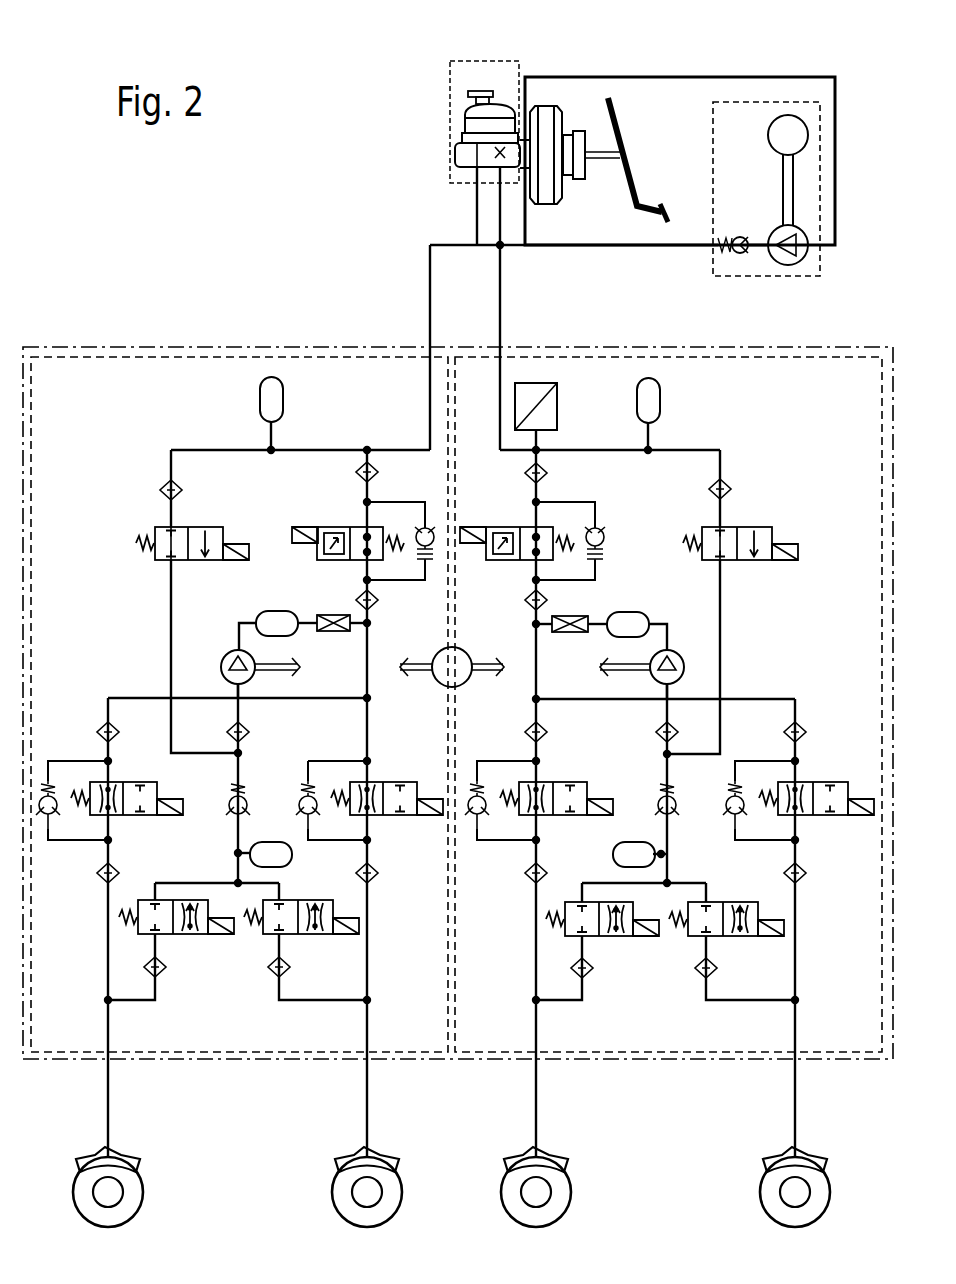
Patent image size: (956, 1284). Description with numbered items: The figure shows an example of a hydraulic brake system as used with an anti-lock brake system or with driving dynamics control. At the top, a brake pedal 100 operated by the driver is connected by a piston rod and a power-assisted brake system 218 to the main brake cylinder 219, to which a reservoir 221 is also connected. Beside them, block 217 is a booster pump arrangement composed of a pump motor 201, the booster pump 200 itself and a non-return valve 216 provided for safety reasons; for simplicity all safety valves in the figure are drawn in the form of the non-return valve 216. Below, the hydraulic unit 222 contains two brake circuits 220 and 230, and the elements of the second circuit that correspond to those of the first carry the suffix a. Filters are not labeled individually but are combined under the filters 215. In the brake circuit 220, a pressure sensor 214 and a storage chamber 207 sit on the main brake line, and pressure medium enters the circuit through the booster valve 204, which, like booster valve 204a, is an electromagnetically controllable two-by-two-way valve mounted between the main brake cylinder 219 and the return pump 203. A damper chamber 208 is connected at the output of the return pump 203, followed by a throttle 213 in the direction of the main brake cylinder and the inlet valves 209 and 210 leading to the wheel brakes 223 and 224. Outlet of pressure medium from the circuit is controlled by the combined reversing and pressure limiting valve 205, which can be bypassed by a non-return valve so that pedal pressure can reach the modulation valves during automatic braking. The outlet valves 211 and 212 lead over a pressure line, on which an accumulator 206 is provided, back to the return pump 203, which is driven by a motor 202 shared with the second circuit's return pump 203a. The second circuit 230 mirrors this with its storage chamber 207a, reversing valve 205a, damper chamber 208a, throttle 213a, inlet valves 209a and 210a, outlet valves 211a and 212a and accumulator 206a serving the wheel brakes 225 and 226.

The brake pedal 100 is at (622, 180).
The booster pump 200 is at (790, 265).
The pump motor 201 is at (788, 117).
The motor 202 is at (462, 680).
The return pump 203 is at (676, 655).
The return pump 203a is at (225, 672).
The booster valve 204 is at (763, 535).
The booster valve 204a is at (158, 535).
The reversing valve 205 is at (495, 530).
The reversing valve 205a is at (322, 527).
The accumulator 206 is at (640, 850).
The accumulator 206a is at (268, 850).
The storage chamber 207 is at (652, 400).
The storage chamber 207a is at (277, 398).
The damper chamber 208 is at (632, 618).
The damper chamber 208a is at (276, 620).
The inlet valve 209 is at (820, 788).
The inlet valve 209a is at (130, 790).
The inlet valve 210 is at (560, 788).
The inlet valve 210a is at (400, 790).
The outlet valve 211 is at (718, 905).
The outlet valve 211a is at (142, 905).
The outlet valve 212 is at (575, 905).
The outlet valve 212a is at (292, 932).
The throttle 213 is at (560, 640).
The throttle 213a is at (333, 615).
The pressure sensor 214 is at (553, 400).
The filter 215 is at (710, 487).
The non-return valve 216 is at (737, 235).
The booster pump arrangement 217 is at (738, 102).
The power-assisted brake system 218 is at (548, 105).
The main brake cylinder 219 is at (458, 158).
The brake circuit 220 is at (848, 372).
The reservoir 221 is at (470, 125).
The hydraulic unit 222 is at (178, 347).
The wheel brake 223 is at (778, 1163).
The wheel brake 224 is at (555, 1163).
The wheel brake 225 is at (350, 1163).
The wheel brake 226 is at (125, 1163).
The brake circuit 230 is at (83, 357).